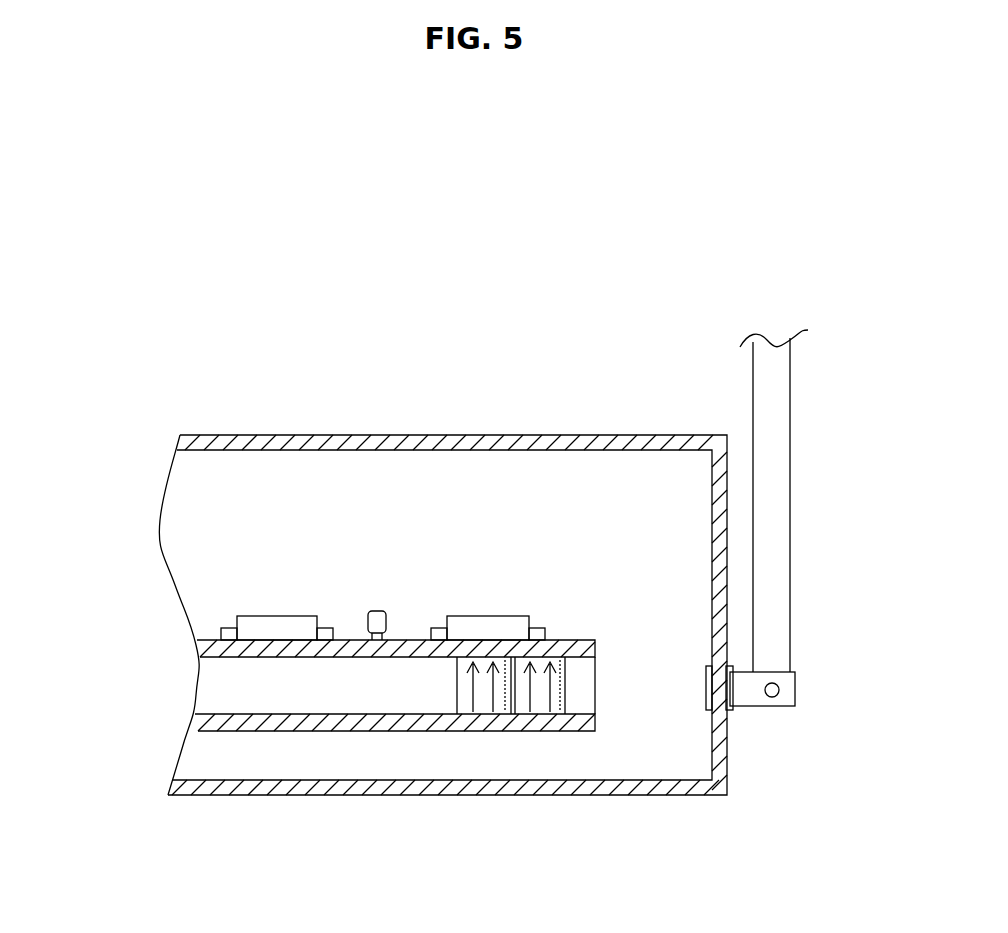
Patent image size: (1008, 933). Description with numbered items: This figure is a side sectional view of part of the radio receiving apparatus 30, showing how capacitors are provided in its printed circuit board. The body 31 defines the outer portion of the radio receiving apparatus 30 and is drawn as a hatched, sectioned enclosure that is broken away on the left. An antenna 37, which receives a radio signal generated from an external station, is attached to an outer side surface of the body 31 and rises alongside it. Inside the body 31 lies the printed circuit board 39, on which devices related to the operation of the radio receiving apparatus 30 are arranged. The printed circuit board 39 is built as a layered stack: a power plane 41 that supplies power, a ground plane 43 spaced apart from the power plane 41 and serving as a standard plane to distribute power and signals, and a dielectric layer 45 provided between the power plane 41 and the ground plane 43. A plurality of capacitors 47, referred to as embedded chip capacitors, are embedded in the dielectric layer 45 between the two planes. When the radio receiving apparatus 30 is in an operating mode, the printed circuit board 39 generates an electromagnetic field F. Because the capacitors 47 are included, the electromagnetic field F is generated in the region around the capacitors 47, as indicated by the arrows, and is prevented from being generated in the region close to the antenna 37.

The radio receiving apparatus 30 is at (696, 292).
The body 31 is at (274, 422).
The antenna 37 is at (780, 453).
The printed circuit board 39 is at (90, 645).
The power plane 41 is at (193, 718).
The ground plane 43 is at (197, 645).
The dielectric layer 45 is at (207, 687).
The capacitors 47 is at (463, 693).
The electromagnetic field F is at (550, 707).